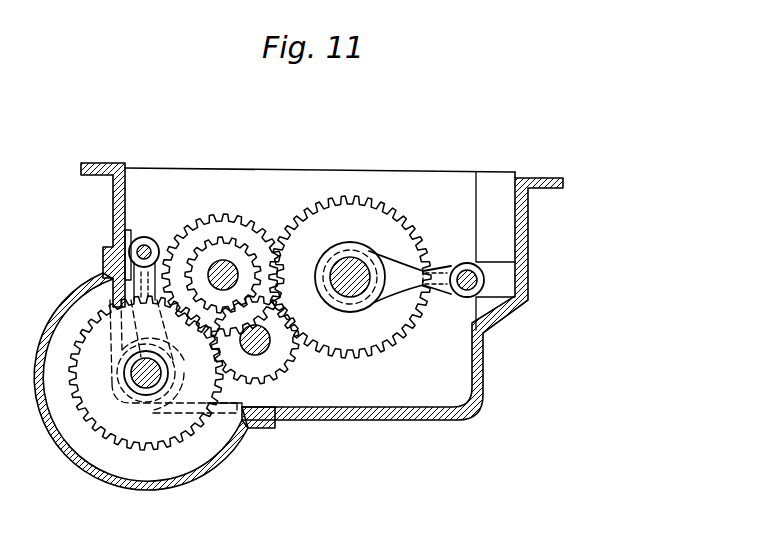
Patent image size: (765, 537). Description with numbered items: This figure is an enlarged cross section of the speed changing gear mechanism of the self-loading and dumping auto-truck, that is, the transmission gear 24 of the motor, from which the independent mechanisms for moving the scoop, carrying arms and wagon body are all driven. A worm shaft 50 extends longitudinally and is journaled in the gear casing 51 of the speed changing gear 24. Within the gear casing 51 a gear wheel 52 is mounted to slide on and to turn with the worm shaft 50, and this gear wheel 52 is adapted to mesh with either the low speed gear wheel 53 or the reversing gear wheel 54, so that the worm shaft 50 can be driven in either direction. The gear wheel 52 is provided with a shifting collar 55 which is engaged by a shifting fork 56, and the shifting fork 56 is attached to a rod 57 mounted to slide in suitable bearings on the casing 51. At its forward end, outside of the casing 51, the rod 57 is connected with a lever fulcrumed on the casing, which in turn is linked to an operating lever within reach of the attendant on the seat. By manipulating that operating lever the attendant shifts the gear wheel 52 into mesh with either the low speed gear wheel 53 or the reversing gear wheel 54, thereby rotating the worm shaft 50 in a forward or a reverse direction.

The transmission gear 24 is at (322, 291).
The worm shaft 50 is at (161, 382).
The gear casing 51 is at (433, 421).
The gear wheel 52 is at (146, 373).
The low speed gear wheel 53 is at (216, 230).
The reversing gear wheel 54 is at (278, 356).
The shifting collar 55 is at (116, 387).
The shifting fork 56 is at (127, 289).
The rod 57 is at (146, 238).